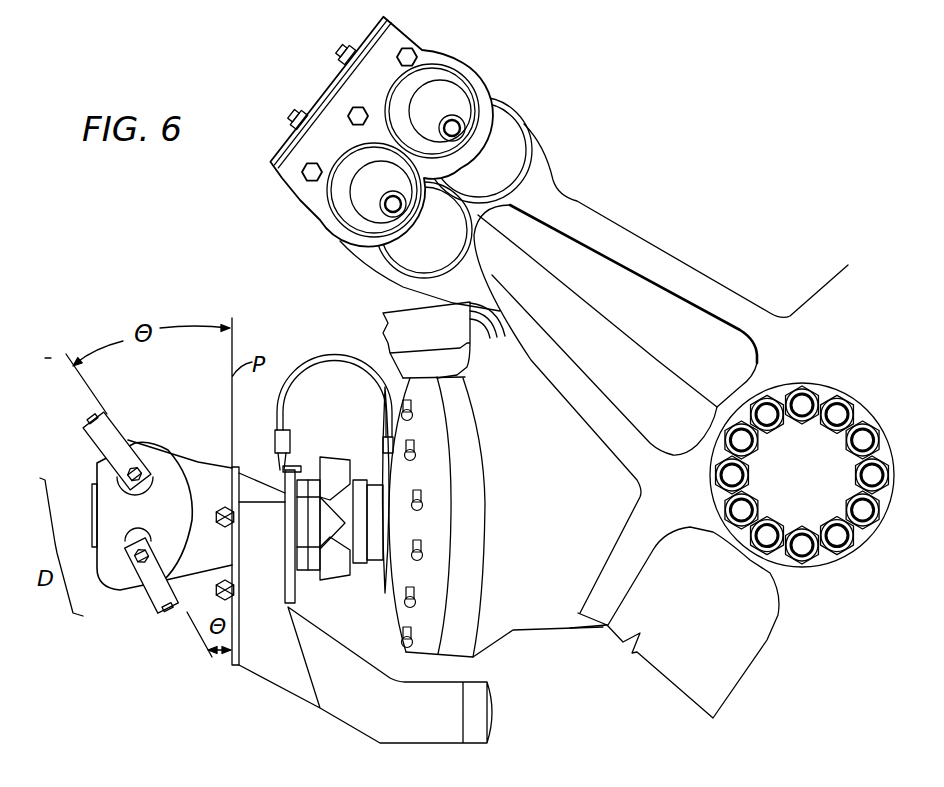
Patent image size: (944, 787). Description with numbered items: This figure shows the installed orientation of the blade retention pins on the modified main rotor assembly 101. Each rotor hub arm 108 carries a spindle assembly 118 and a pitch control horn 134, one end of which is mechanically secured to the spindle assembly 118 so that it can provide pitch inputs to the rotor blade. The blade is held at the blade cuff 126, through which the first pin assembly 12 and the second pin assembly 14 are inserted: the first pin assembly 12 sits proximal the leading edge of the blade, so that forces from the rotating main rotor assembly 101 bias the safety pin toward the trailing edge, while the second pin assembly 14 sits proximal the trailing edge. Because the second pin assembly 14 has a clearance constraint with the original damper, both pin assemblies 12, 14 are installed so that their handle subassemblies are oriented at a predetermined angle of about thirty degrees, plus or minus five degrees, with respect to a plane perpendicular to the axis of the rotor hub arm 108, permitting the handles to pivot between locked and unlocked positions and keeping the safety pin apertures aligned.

The main rotor assembly 101 is at (278, 277).
The rotor hub arm 108 is at (584, 512).
The spindle assembly 118 is at (201, 440).
The blade cuff 126 is at (178, 523).
The pitch control horn 134 is at (420, 727).
The second pin assembly 14 is at (86, 442).
The first pin assembly 12 is at (142, 608).